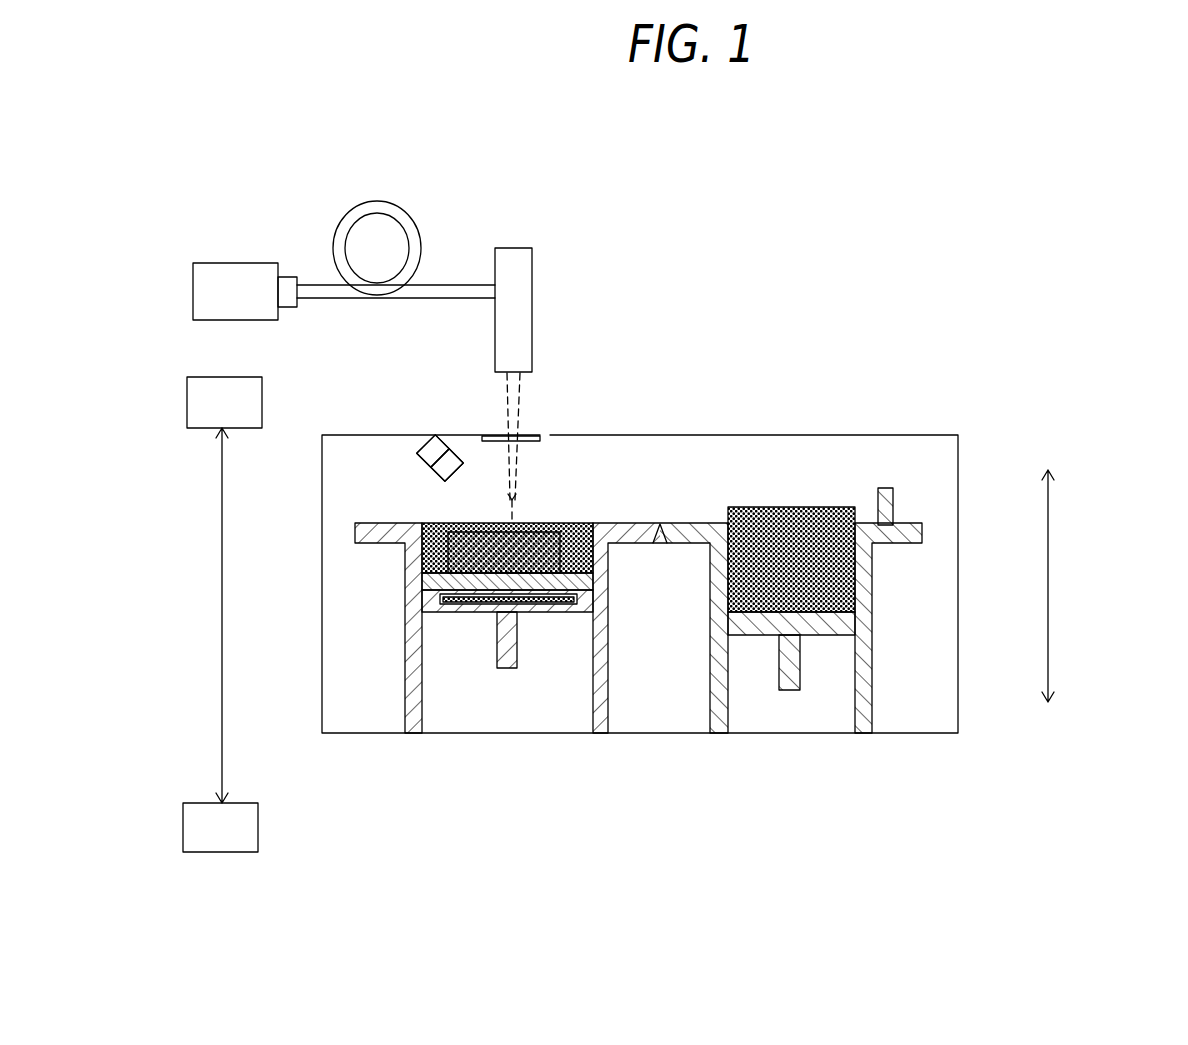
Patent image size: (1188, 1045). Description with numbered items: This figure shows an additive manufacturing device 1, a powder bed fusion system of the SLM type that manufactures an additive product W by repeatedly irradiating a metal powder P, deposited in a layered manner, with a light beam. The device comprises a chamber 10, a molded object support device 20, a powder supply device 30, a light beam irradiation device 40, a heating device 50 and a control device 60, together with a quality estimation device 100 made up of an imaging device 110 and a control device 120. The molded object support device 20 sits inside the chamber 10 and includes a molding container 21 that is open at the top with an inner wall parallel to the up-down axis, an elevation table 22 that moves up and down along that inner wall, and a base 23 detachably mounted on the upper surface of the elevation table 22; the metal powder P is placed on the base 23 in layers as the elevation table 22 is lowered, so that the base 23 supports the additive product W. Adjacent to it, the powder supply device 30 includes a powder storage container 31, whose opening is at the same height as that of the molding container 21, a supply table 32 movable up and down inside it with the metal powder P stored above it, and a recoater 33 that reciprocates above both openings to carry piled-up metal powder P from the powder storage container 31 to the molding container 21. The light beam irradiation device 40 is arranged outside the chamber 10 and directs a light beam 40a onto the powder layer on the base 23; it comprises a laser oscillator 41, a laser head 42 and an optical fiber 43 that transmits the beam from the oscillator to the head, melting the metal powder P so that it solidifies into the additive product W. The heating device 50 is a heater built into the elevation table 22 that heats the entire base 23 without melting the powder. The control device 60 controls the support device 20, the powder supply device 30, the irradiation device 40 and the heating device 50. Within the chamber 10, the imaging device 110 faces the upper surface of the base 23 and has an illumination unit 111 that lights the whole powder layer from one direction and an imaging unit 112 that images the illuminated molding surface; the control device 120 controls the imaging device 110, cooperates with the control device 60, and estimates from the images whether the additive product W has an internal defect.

The additive manufacturing device 1 is at (905, 266).
The chamber 10 is at (678, 435).
The molded object support device 20 is at (377, 629).
The molding container 21 is at (403, 690).
The elevation table 22 is at (507, 669).
The base 23 is at (425, 613).
The powder supply device 30 is at (937, 461).
The powder storage container 31 is at (871, 600).
The supply table 32 is at (790, 691).
The recoater 33 is at (893, 505).
The light beam irradiation device 40 is at (471, 201).
The light beam 40a is at (502, 492).
The laser oscillator 41 is at (234, 263).
The laser head 42 is at (508, 250).
The optical fiber 43 is at (377, 201).
The heating device 50 is at (436, 573).
The control device 60 is at (220, 852).
The quality estimation device 100 is at (396, 348).
The imaging device 110 is at (453, 440).
The illumination unit 111 is at (432, 440).
The imaging unit 112 is at (421, 456).
The control device 120 is at (235, 377).
The additive product W is at (473, 541).
The metal powder P is at (838, 573).